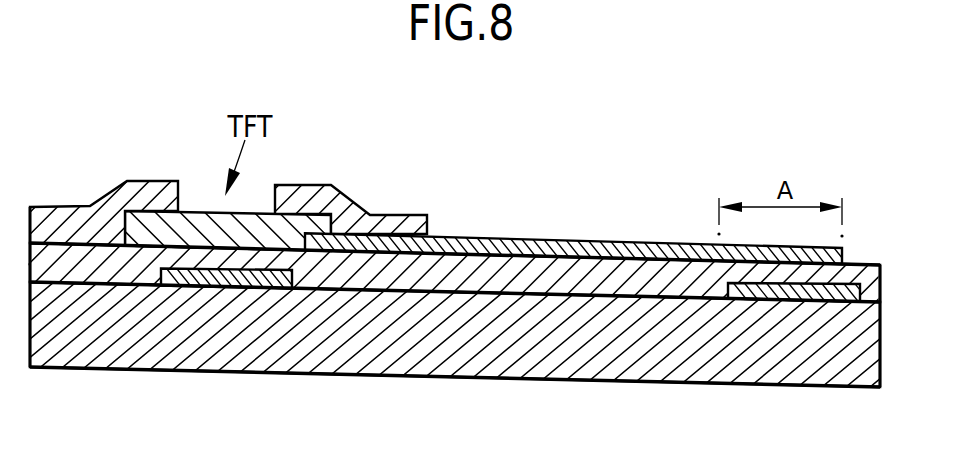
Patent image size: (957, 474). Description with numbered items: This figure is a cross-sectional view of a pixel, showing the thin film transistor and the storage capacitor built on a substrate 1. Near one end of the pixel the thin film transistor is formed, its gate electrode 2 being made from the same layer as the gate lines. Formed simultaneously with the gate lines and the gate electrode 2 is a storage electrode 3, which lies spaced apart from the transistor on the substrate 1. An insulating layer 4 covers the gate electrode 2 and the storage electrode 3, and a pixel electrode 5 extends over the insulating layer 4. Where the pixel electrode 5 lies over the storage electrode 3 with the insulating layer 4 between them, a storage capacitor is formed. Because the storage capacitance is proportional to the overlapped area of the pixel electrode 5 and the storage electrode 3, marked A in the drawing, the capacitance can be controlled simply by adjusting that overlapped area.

The substrate 1 is at (127, 352).
The gate electrode 2 is at (248, 288).
The storage electrode 3 is at (790, 299).
The insulating layer 4 is at (458, 263).
The pixel electrode 5 is at (545, 238).